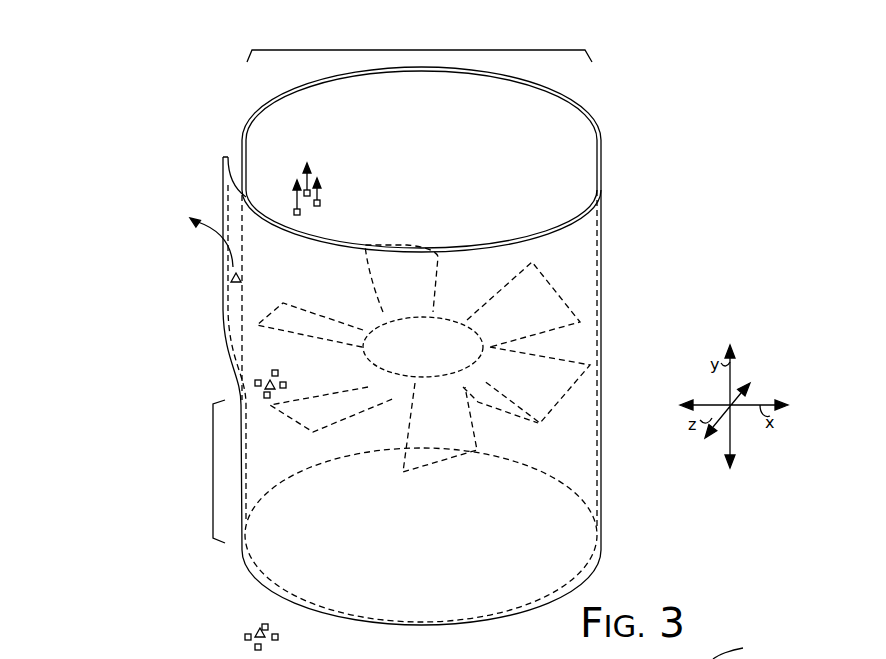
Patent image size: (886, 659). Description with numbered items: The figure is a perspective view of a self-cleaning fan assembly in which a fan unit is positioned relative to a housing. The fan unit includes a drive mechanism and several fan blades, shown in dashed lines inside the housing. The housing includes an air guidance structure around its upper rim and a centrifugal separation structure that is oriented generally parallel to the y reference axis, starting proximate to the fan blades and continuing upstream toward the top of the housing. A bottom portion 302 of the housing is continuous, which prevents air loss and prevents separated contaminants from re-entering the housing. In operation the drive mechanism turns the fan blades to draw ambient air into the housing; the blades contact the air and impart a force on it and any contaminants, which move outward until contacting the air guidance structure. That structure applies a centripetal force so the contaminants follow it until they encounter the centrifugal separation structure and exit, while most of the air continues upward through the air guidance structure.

The bottom portion 302 is at (213, 455).